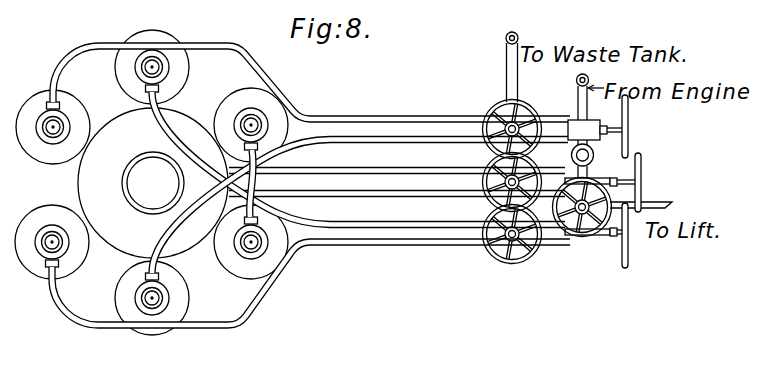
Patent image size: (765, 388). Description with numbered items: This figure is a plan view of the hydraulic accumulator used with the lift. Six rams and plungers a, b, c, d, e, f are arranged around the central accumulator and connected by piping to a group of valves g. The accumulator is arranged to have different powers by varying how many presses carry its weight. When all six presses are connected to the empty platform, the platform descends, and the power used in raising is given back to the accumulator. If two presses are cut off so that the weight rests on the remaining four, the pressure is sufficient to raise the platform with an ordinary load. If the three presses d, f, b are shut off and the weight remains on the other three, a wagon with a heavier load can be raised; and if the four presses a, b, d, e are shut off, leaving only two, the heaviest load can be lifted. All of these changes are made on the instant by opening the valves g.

The ram and plunger a is at (251, 125).
The ram and plunger b is at (251, 242).
The ram and plunger c is at (152, 298).
The ram and plunger d is at (52, 242).
The ram and plunger e is at (53, 127).
The ram and plunger f is at (152, 67).
The valve g is at (569, 182).